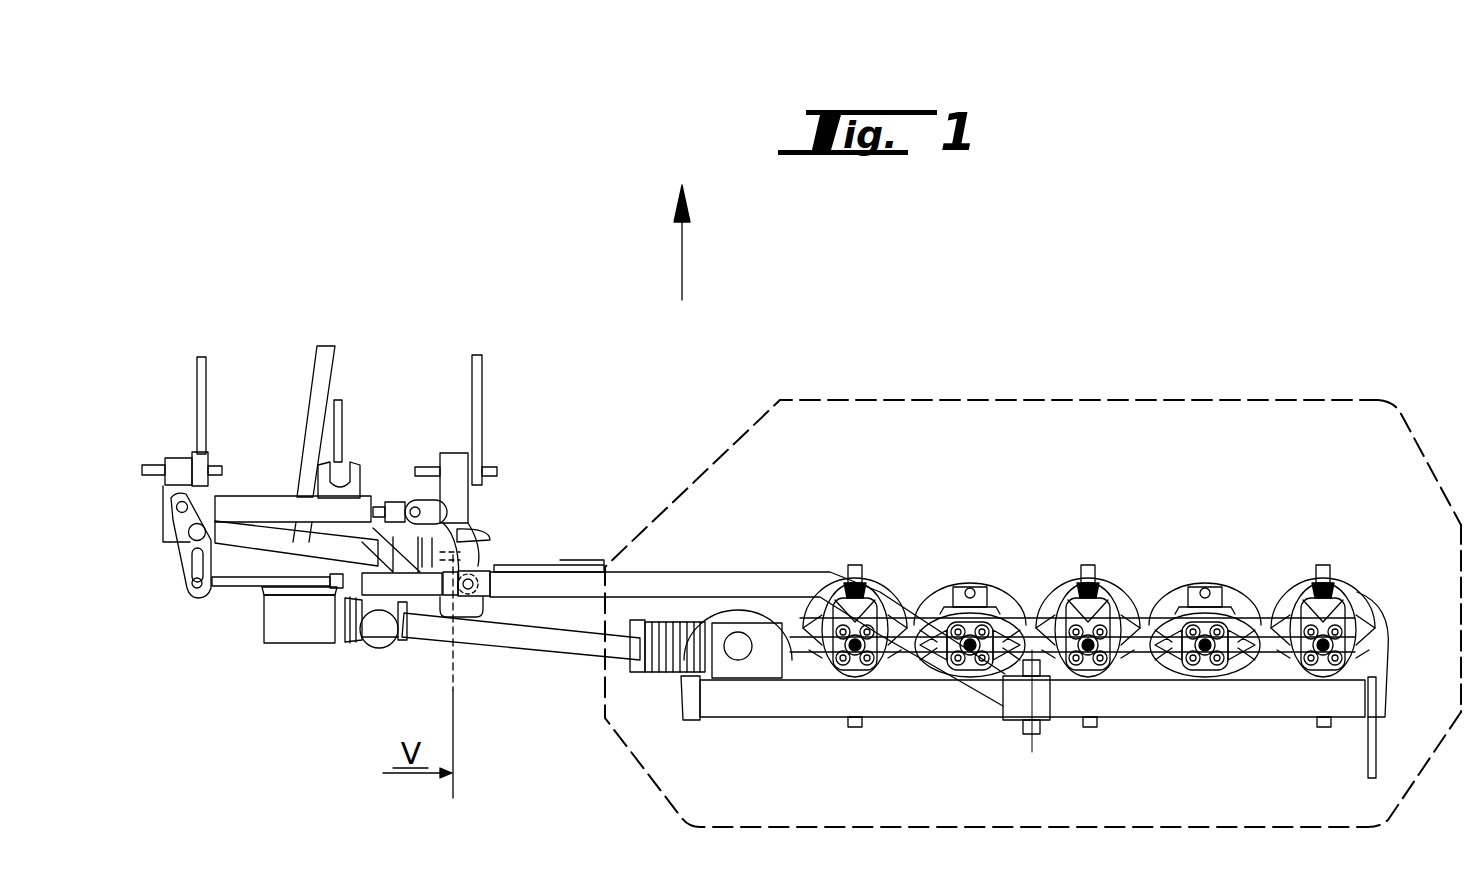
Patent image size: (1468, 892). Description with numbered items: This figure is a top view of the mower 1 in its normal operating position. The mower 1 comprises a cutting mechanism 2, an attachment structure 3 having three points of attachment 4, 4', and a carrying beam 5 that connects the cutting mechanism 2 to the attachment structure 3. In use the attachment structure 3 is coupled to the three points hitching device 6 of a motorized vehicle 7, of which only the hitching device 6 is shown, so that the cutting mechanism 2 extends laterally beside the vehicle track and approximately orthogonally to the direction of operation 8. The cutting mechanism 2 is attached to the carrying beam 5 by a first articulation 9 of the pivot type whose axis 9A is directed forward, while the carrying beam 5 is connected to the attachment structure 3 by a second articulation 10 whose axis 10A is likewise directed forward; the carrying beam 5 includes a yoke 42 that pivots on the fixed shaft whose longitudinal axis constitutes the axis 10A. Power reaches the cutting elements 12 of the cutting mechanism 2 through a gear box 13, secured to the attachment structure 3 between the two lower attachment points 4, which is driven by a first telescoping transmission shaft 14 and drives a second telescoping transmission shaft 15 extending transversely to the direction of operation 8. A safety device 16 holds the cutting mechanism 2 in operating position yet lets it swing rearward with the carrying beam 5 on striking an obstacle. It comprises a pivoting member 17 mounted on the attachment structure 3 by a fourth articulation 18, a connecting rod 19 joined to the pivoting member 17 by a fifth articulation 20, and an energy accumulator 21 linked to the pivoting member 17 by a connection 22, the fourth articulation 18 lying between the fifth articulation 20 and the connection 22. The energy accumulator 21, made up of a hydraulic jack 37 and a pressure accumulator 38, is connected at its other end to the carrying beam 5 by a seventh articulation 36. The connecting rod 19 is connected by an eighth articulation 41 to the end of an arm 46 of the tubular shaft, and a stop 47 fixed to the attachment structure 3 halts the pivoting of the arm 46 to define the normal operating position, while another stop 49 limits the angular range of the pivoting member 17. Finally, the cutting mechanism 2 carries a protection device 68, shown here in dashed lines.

The mower 1 is at (1052, 308).
The cutting mechanism 2 is at (995, 574).
The attachment structure 3 is at (176, 450).
The lower attachment points 4 is at (319, 450).
The upper attachment point 4' is at (351, 449).
The carrying beam 5 is at (714, 564).
The three points hitching device 6 is at (337, 425).
The motorized vehicle 7 is at (462, 371).
The direction of operation 8 is at (683, 270).
The first articulation 9 is at (1022, 725).
The axis of the first articulation 9A is at (1040, 745).
The second articulation 10 is at (453, 615).
The axis of the second articulation 10A is at (455, 758).
The cutting elements 12 is at (1178, 585).
The gear box 13 is at (291, 642).
The first telescoping transmission shaft 14 is at (326, 352).
The second telescoping transmission shaft 15 is at (590, 655).
The safety device 16 is at (170, 575).
The pivoting member 17 is at (194, 588).
The fourth articulation 18 is at (187, 540).
The connecting rod 19 is at (275, 505).
The fifth articulation 20 is at (176, 504).
The energy accumulator 21 is at (240, 582).
The connection 22 is at (197, 606).
The seventh articulation 36 is at (455, 617).
The hydraulic jack 37 is at (412, 585).
The pressure accumulator 38 is at (374, 647).
The eighth articulation 41 is at (418, 508).
The yoke 42 is at (520, 565).
The arm 46 is at (438, 507).
The stop 47 is at (432, 521).
The stop 49 is at (163, 520).
The protection device 68 is at (725, 445).